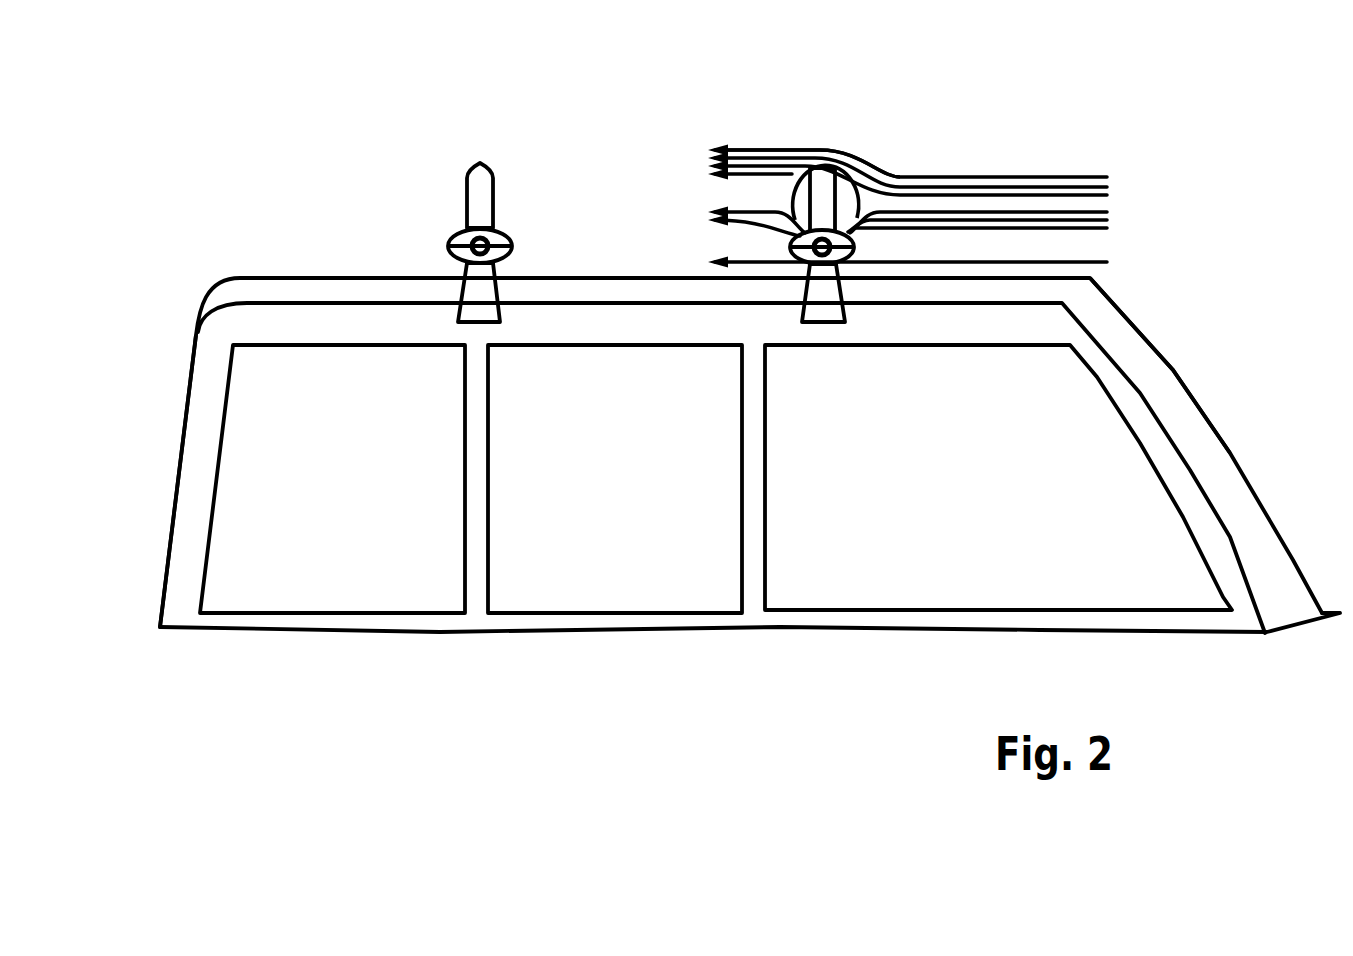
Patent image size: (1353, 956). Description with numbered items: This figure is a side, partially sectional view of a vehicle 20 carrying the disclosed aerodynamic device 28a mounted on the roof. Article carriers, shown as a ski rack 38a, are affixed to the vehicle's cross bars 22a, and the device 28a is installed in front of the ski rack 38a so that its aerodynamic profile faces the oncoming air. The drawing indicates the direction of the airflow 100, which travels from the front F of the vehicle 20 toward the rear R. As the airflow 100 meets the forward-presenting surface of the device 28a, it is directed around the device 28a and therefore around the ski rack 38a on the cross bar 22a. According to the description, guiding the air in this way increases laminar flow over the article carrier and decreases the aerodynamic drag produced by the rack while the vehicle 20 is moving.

The vehicle 20 is at (662, 650).
The cross bar 22a is at (693, 193).
The ski rack 38a is at (817, 178).
The aerodynamic device 28a is at (845, 140).
The airflow 100 is at (907, 166).
The rear R is at (158, 452).
The front F is at (1213, 372).